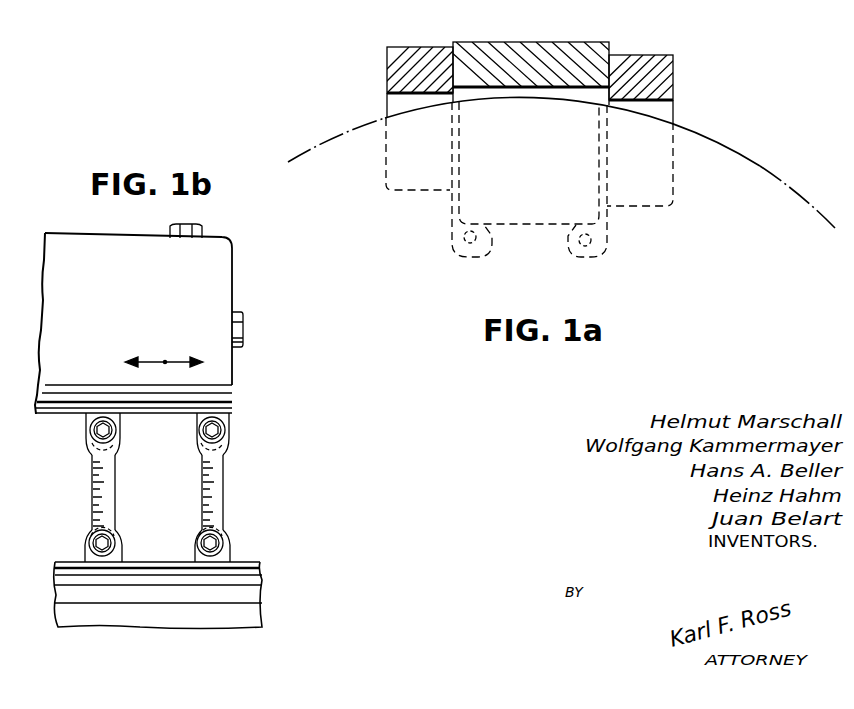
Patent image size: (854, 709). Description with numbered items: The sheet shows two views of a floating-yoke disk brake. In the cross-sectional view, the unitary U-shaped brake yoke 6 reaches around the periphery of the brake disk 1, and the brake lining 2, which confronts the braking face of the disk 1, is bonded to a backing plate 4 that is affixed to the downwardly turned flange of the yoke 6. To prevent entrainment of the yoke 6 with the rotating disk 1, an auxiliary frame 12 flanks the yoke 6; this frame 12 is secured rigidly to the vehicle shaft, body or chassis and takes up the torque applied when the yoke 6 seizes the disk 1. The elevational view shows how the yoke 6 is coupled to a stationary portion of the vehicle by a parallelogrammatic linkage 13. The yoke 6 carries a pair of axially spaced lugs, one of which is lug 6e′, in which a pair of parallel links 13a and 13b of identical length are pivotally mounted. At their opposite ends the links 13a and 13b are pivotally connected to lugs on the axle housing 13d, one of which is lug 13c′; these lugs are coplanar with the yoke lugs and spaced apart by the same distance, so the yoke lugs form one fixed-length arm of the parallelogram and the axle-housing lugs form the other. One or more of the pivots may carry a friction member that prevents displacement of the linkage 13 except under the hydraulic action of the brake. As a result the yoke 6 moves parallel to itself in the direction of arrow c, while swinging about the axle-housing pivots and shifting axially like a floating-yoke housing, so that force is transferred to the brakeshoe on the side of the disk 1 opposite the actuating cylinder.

In FIG. 1A, the brake disk 1 is at (652, 130).
In FIG. 1A, the brake lining 2 is at (530, 210).
In FIG. 1A, the backing plate 4 is at (456, 181).
In FIG. 1A, the brake yoke 6 is at (578, 54).
In FIG. 1B, the brake yoke 6 is at (218, 274).
In FIG. 1A, the frame 12 is at (650, 57).
In FIG. 1B, the lug 6e′ is at (88, 422).
In FIG. 1B, the parallelogrammatic linkage 13 is at (227, 532).
In FIG. 1B, the link 13a is at (104, 493).
In FIG. 1B, the link 13b is at (215, 478).
In FIG. 1B, the lug 13c′ is at (88, 552).
In FIG. 1B, the axle housing 13d is at (155, 622).
In FIG. 1B, the arrow c is at (170, 358).